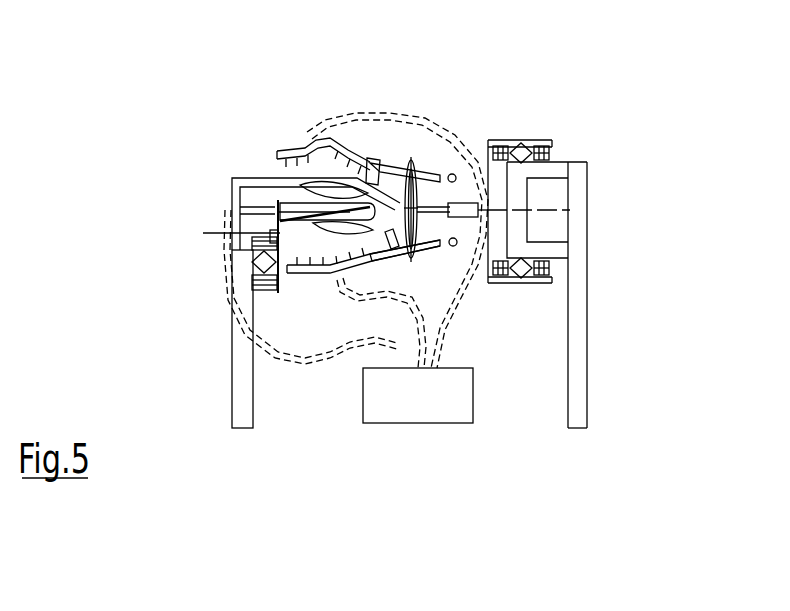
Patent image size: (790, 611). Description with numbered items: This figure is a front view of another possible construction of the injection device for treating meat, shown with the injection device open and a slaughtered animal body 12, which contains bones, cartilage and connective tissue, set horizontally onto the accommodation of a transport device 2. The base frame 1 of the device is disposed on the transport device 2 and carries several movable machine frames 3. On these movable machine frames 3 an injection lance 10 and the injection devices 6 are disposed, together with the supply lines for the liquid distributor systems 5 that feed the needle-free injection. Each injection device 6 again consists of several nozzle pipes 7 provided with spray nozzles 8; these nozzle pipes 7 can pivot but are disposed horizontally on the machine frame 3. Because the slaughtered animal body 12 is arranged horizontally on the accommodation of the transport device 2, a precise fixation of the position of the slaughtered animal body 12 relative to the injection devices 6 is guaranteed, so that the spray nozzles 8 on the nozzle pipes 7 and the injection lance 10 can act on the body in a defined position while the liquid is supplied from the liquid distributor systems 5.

The base frame 1 is at (466, 331).
The transport device 2 is at (212, 192).
The movable machine frame 3 is at (587, 141).
The liquid distributor system 5 is at (397, 347).
The injection device 6 is at (483, 130).
The nozzle pipe 7 is at (363, 254).
The spray nozzle 8 is at (253, 88).
The injection lance 10 is at (225, 184).
The slaughtered animal body 12 is at (411, 131).